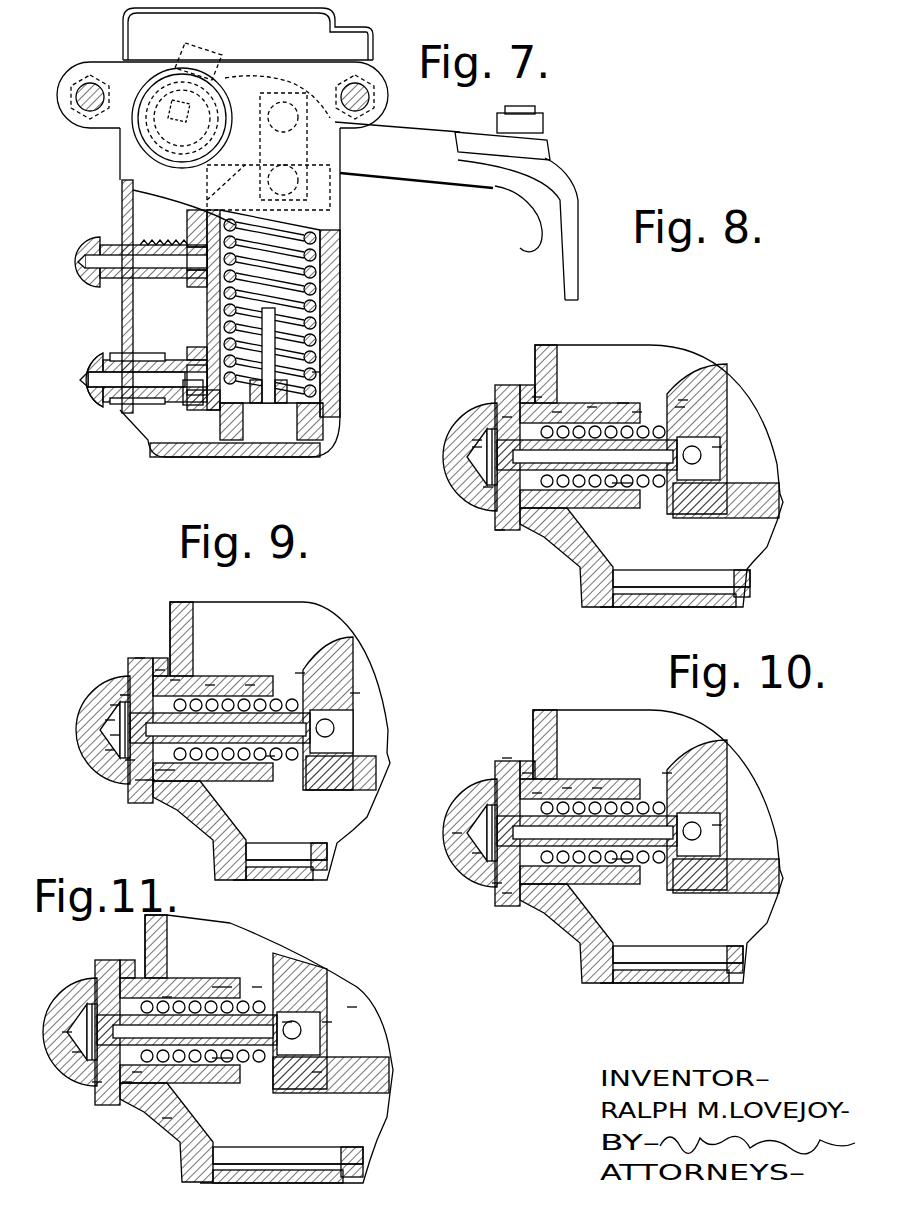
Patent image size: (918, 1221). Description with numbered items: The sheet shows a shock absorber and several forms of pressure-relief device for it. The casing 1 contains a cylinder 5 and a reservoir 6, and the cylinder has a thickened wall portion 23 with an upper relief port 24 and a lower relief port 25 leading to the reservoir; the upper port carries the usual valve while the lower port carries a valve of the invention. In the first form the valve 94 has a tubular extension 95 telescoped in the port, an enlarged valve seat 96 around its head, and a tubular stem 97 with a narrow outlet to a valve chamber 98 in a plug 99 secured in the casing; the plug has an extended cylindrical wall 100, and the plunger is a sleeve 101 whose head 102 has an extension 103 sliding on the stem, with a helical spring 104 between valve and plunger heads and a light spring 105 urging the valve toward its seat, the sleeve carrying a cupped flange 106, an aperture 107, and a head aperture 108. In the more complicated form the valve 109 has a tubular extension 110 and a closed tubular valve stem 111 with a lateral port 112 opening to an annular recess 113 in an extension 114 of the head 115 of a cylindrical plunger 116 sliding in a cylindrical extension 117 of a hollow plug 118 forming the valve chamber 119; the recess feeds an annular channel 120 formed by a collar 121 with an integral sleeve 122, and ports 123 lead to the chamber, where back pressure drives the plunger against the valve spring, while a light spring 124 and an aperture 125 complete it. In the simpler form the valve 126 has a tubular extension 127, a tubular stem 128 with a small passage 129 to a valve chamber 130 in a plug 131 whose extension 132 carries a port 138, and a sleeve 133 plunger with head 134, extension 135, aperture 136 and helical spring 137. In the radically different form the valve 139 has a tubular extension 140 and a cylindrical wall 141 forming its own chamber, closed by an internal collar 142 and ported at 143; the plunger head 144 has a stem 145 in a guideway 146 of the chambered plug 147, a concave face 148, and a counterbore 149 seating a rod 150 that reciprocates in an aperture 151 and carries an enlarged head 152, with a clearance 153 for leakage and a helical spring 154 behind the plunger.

In FIG. 7, the casing 1 is at (340, 300).
In FIG. 8, the casing 1 is at (566, 557).
In FIG. 9, the casing 1 is at (199, 721).
In FIG. 10, the casing 1 is at (566, 933).
In FIG. 11, the casing 1 is at (166, 1132).
In FIG. 7, the cylinder 5 is at (320, 374).
In FIG. 8, the cylinder 5 is at (709, 535).
In FIG. 9, the cylinder 5 is at (321, 805).
In FIG. 10, the cylinder 5 is at (708, 911).
In FIG. 11, the cylinder 5 is at (312, 1118).
In FIG. 7, the reservoir 6 is at (122, 328).
In FIG. 8, the reservoir 6 is at (656, 392).
In FIG. 9, the reservoir 6 is at (279, 655).
In FIG. 10, the reservoir 6 is at (655, 765).
In FIG. 11, the reservoir 6 is at (267, 969).
In FIG. 7, the thickened wall portion 23 is at (200, 285).
In FIG. 7, the relief port 24 is at (205, 225).
In FIG. 7, the relief port 25 is at (205, 395).
In FIG. 8, the relief port 25 is at (664, 438).
In FIG. 9, the relief port 25 is at (277, 720).
In FIG. 10, the relief port 25 is at (659, 827).
In FIG. 11, the relief port 25 is at (264, 1026).
In FIG. 7, the valve 94 is at (185, 395).
In FIG. 8, the valve 94 is at (700, 347).
In FIG. 8, the tubular extension 95 is at (758, 417).
In FIG. 8, the enlarged valve seat 96 is at (740, 379).
In FIG. 7, the tubular stem 97 is at (80, 380).
In FIG. 8, the tubular stem 97 is at (613, 518).
In FIG. 8, the valve chamber 98 is at (446, 429).
In FIG. 7, the plug 99 is at (100, 405).
In FIG. 8, the plug 99 is at (482, 553).
In FIG. 8, the extended cylindrical wall 100 is at (611, 349).
In FIG. 8, the sleeve 101 is at (568, 361).
In FIG. 8, the head 102 is at (492, 374).
In FIG. 8, the extension 103 is at (448, 399).
In FIG. 8, the helical spring 104 is at (655, 523).
In FIG. 8, the light spring 105 is at (442, 502).
In FIG. 8, the cupped flange 106 is at (640, 363).
In FIG. 8, the aperture 107 is at (623, 387).
In FIG. 8, the aperture 108 is at (528, 345).
In FIG. 9, the valve 109 is at (302, 652).
In FIG. 9, the tubular extension 110 is at (388, 673).
In FIG. 9, the tubular valve stem 111 is at (273, 792).
In FIG. 9, the port 112 is at (72, 738).
In FIG. 9, the annular recess 113 is at (95, 677).
In FIG. 9, the extension 114 is at (157, 804).
In FIG. 9, the head 115 is at (178, 815).
In FIG. 9, the cylindrical plunger 116 is at (222, 668).
In FIG. 9, the cylindrical extension 117 is at (255, 653).
In FIG. 9, the hollow plug 118 is at (130, 634).
In FIG. 9, the valve chamber 119 is at (76, 764).
In FIG. 9, the annular channel 120 is at (92, 783).
In FIG. 9, the collar 121 is at (70, 703).
In FIG. 9, the sleeve 122 is at (148, 622).
In FIG. 9, the ports 123 is at (108, 732).
In FIG. 9, the light spring 124 is at (105, 804).
In FIG. 9, the aperture 125 is at (198, 654).
In FIG. 10, the valve 126 is at (667, 750).
In FIG. 10, the tubular extension 127 is at (775, 798).
In FIG. 10, the tubular stem 128 is at (656, 893).
In FIG. 10, the passage 129 is at (440, 875).
In FIG. 10, the valve chamber 130 is at (427, 844).
In FIG. 10, the plug 131 is at (466, 903).
In FIG. 10, the extension 132 is at (610, 770).
In FIG. 10, the sleeve 133 is at (595, 732).
In FIG. 10, the head 134 is at (508, 731).
In FIG. 10, the extension 135 is at (478, 921).
In FIG. 10, the aperture 136 is at (553, 715).
In FIG. 10, the helical spring 137 is at (612, 892).
In FIG. 10, the port 138 is at (561, 759).
In FIG. 11, the valve 139 is at (339, 1102).
In FIG. 11, the tubular extension 140 is at (368, 984).
In FIG. 11, the cylindrical wall 141 is at (226, 967).
In FIG. 11, the internal collar 142 is at (183, 964).
In FIG. 11, the port 143 is at (251, 944).
In FIG. 11, the plunger head 144 is at (240, 1084).
In FIG. 11, the stem 145 is at (62, 1100).
In FIG. 11, the guideway 146 is at (50, 1071).
In FIG. 11, the chambered plug 147 is at (89, 1129).
In FIG. 11, the concave face 148 is at (259, 1098).
In FIG. 11, the counterbore 149 is at (172, 1152).
In FIG. 11, the rod 150 is at (381, 1001).
In FIG. 11, the aperture 151 is at (309, 971).
In FIG. 11, the enlarged head 152 is at (151, 1116).
In FIG. 11, the clearance 153 is at (283, 941).
In FIG. 11, the helical spring 154 is at (126, 1140).